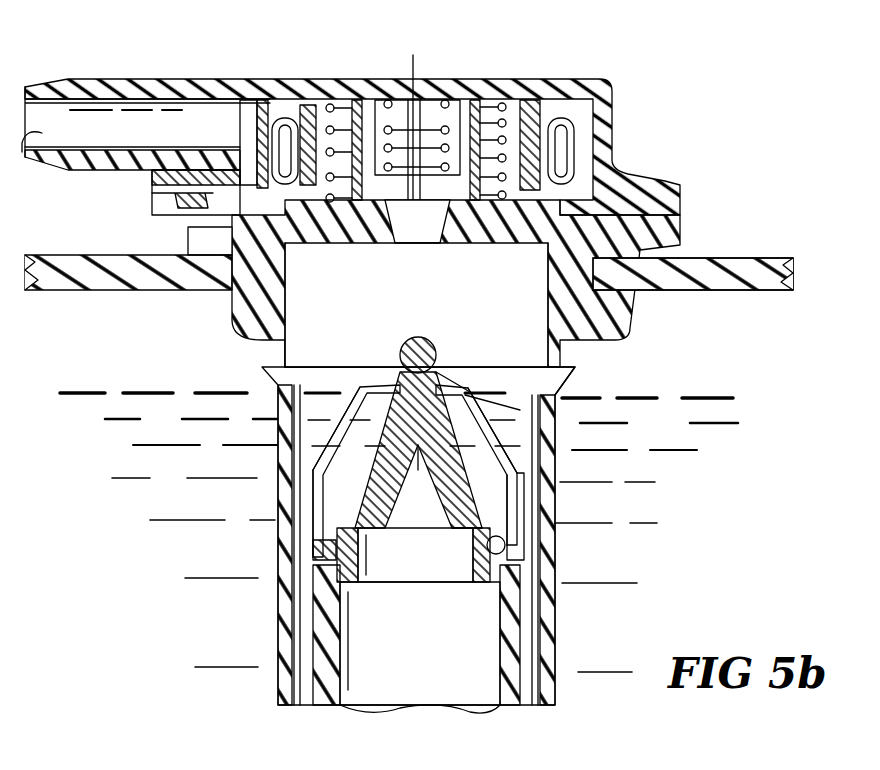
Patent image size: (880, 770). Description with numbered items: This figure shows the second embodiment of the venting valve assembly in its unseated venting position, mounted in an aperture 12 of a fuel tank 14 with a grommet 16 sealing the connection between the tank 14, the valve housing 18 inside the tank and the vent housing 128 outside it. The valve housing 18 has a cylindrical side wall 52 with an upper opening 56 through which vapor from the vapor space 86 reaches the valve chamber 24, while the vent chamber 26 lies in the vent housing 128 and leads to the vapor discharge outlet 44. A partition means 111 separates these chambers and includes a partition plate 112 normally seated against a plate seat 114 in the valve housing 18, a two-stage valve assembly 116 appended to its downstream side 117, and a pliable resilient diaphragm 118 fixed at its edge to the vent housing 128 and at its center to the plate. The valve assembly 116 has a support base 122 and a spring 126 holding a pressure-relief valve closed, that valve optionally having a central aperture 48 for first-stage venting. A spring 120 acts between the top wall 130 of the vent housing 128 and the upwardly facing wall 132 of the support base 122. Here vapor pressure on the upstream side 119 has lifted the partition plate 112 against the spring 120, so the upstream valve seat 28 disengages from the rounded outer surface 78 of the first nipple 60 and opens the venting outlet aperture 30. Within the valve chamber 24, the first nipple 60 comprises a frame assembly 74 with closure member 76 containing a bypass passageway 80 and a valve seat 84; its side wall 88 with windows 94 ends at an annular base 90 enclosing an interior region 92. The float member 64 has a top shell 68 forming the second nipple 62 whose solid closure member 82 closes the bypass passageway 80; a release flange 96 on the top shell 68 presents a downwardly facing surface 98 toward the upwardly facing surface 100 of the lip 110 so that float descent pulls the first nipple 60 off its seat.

The aperture 12 is at (232, 318).
The fuel tank 14 is at (86, 262).
The grommet 16 is at (190, 237).
The valve housing 18 is at (553, 668).
The valve chamber 24 is at (306, 405).
The vent chamber 26 is at (243, 118).
The upstream valve seat 28 is at (385, 243).
The venting outlet aperture 30 is at (420, 127).
The vapor discharge outlet 44 is at (27, 166).
The central aperture 48 is at (470, 135).
The cylindrical side wall 52 is at (546, 576).
The upper opening 56 is at (568, 366).
The first nipple 60 is at (525, 421).
The second nipple 62 is at (415, 471).
The float member 64 is at (528, 612).
The top shell 68 is at (322, 632).
The frame assembly 74 is at (522, 512).
The closure member 76 is at (446, 378).
The rounded outer surface 78 is at (413, 348).
The bypass passageway 80 is at (390, 437).
The solid closure member 82 is at (428, 412).
The valve seat 84 is at (440, 405).
The vapor space 86 is at (728, 349).
The side wall 88 is at (340, 500).
The annular base 90 is at (330, 548).
The interior region 92 is at (480, 468).
The windows 94 is at (350, 418).
The release flange 96 is at (478, 525).
The downwardly facing surface 98 is at (490, 530).
The upwardly facing surface 100 is at (505, 542).
The lip 110 is at (470, 578).
The partition means 111 is at (356, 100).
The partition plate 112 is at (535, 253).
The plate seat 114 is at (287, 367).
The two-stage valve assembly 116 is at (425, 165).
The downstream side 117 is at (307, 265).
The pliable resilient diaphragm 118 is at (300, 102).
The upstream side 119 is at (483, 248).
The spring 120 is at (290, 100).
The support base 122 is at (478, 112).
The spring 126 is at (325, 100).
The vent housing 128 is at (622, 118).
The top wall 130 is at (408, 118).
The upwardly facing wall 132 is at (272, 165).